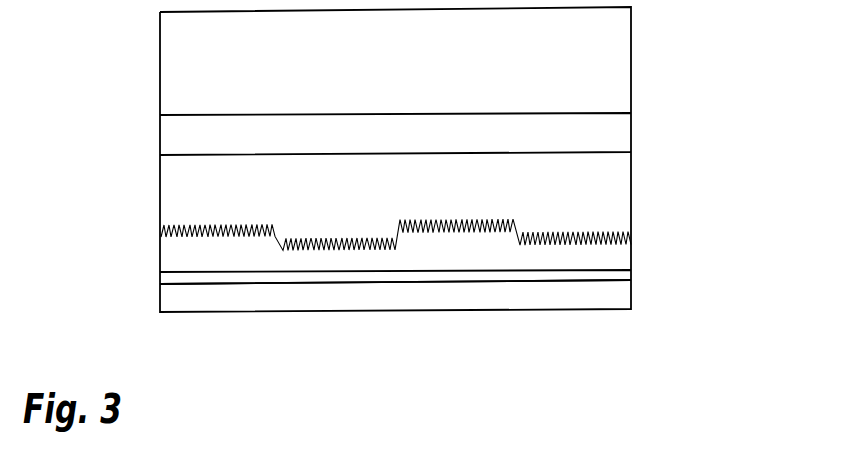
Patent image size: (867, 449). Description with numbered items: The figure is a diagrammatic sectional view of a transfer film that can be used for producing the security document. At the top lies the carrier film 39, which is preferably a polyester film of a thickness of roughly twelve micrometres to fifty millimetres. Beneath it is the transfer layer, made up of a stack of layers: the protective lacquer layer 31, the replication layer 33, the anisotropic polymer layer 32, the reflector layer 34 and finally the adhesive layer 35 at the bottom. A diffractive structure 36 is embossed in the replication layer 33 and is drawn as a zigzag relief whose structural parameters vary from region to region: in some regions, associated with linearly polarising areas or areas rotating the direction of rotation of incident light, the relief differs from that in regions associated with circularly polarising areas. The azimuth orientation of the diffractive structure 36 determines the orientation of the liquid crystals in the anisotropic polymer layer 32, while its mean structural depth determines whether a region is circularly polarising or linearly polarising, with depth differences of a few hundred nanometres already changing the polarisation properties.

The carrier film 39 is at (612, 42).
The protective lacquer layer 31 is at (615, 138).
The replication layer 33 is at (439, 212).
The diffractive structure 36 is at (521, 227).
The anisotropic polymer layer 32 is at (622, 259).
The reflector layer 34 is at (622, 275).
The adhesive layer 35 is at (620, 300).